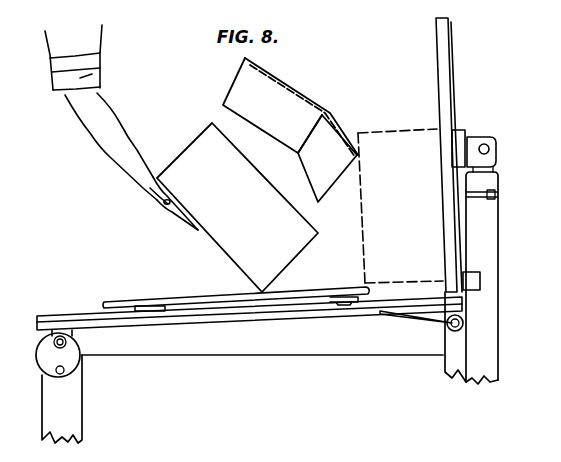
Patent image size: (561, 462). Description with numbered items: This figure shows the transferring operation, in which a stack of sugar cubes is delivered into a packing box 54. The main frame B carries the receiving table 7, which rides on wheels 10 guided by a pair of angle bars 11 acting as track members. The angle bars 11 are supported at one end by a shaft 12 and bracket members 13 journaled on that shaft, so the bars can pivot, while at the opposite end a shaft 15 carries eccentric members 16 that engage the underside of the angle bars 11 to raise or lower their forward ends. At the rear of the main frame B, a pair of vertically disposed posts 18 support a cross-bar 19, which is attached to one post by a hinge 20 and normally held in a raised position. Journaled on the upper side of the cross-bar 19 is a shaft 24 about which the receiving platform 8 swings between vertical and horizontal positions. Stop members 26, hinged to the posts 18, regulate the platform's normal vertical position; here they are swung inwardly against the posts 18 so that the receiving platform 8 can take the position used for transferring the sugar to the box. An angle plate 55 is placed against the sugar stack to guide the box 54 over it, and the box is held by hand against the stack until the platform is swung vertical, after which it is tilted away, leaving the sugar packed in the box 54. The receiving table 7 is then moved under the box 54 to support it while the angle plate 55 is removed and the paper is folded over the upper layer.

The receiving table 7 is at (172, 298).
The receiving platform 8 is at (452, 261).
The wheels 10 is at (153, 312).
The angle bars 11 is at (273, 313).
The shaft 12 is at (448, 328).
The bracket members 13 is at (446, 321).
The shaft 15 is at (55, 370).
The eccentric members 16 is at (58, 355).
The posts 18 is at (487, 215).
The cross-bar 19 is at (487, 182).
The hinge 20 is at (487, 194).
The shaft 24 is at (490, 150).
The stop members 26 is at (480, 280).
The packing box 54 is at (237, 207).
The angle plate 55 is at (290, 130).
The main frame B is at (340, 340).